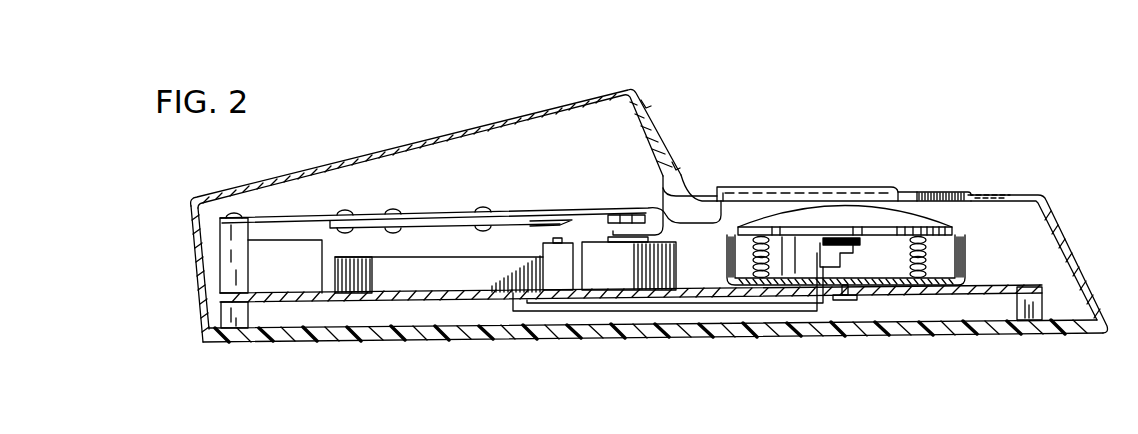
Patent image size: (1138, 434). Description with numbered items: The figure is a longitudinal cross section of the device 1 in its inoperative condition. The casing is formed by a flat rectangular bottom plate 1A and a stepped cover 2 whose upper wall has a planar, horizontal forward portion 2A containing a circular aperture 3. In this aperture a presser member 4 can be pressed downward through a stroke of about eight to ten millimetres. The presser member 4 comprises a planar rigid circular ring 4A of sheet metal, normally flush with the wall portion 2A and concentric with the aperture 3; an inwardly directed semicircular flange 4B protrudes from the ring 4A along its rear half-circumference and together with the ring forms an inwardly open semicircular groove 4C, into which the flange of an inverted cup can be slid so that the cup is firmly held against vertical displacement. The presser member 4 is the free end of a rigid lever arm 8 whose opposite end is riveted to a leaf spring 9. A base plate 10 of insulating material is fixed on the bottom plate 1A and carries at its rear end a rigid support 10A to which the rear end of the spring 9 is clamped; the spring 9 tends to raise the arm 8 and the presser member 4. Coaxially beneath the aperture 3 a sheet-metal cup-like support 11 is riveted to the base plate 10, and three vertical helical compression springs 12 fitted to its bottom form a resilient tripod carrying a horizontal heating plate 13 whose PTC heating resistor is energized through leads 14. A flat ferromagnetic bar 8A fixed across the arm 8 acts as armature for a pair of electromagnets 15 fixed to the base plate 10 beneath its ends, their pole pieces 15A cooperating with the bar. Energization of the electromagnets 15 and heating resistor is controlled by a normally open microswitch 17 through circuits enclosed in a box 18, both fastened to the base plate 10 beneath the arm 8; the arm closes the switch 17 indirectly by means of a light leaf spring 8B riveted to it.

The device 1 is at (649, 234).
The bottom plate 1A is at (323, 338).
The stepped cover 2 is at (457, 148).
The forward portion 2A is at (1015, 195).
The circular aperture 3 is at (978, 197).
The presser member 4 is at (848, 162).
The circular ring 4A is at (950, 190).
The semicircular flange 4B is at (892, 186).
The semicircular groove 4C is at (828, 192).
The lever arm 8 is at (470, 189).
The flat bar 8A is at (622, 216).
The light leaf spring 8B is at (541, 221).
The leaf spring 9 is at (318, 215).
The base plate 10 is at (631, 315).
The rigid support 10A is at (232, 263).
The cup-like support 11 is at (874, 260).
The helical compression springs 12 is at (770, 262).
The heating plate 13 is at (858, 218).
The leads 14 is at (712, 304).
The electromagnets 15 is at (660, 265).
The pole pieces 15A is at (662, 172).
The microswitch 17 is at (558, 257).
The box 18 is at (423, 270).